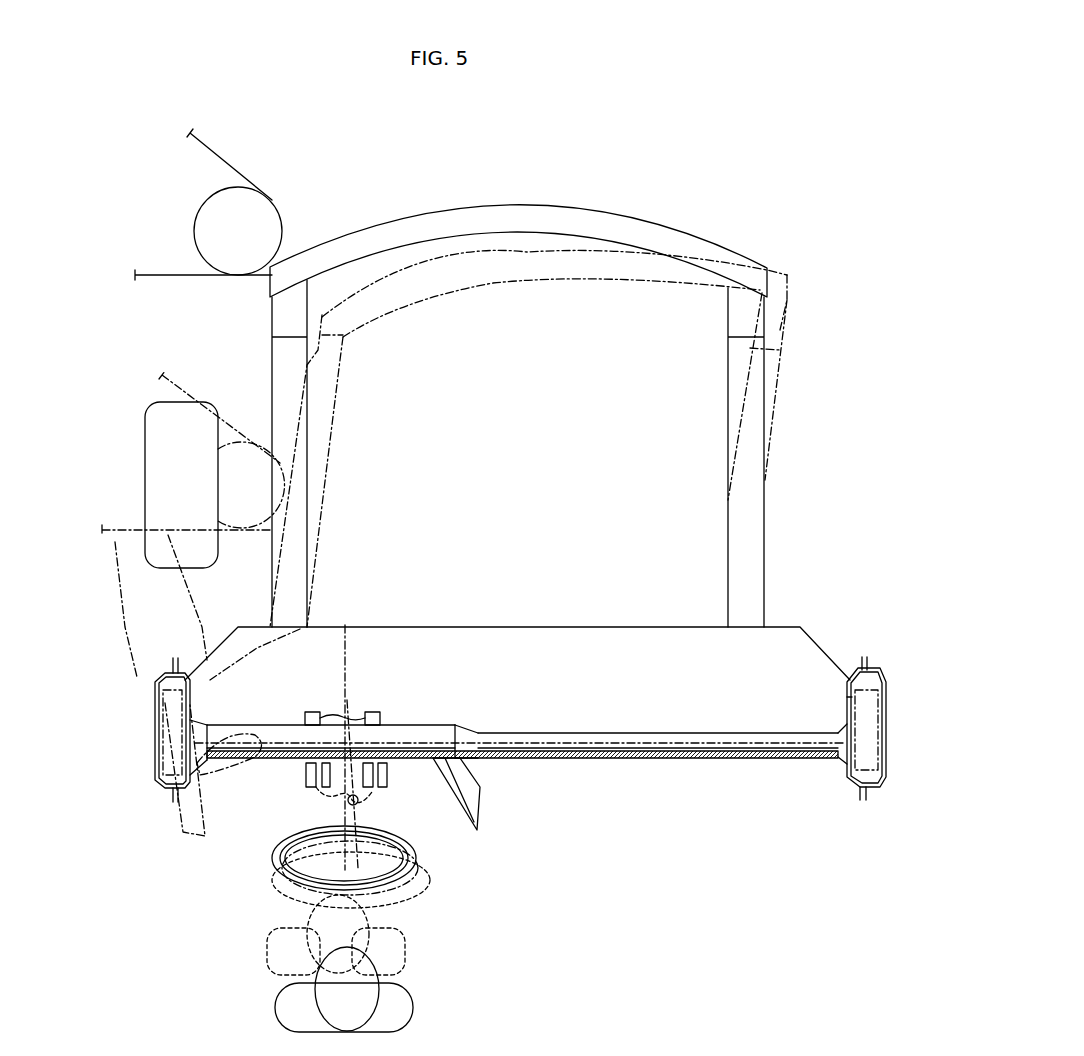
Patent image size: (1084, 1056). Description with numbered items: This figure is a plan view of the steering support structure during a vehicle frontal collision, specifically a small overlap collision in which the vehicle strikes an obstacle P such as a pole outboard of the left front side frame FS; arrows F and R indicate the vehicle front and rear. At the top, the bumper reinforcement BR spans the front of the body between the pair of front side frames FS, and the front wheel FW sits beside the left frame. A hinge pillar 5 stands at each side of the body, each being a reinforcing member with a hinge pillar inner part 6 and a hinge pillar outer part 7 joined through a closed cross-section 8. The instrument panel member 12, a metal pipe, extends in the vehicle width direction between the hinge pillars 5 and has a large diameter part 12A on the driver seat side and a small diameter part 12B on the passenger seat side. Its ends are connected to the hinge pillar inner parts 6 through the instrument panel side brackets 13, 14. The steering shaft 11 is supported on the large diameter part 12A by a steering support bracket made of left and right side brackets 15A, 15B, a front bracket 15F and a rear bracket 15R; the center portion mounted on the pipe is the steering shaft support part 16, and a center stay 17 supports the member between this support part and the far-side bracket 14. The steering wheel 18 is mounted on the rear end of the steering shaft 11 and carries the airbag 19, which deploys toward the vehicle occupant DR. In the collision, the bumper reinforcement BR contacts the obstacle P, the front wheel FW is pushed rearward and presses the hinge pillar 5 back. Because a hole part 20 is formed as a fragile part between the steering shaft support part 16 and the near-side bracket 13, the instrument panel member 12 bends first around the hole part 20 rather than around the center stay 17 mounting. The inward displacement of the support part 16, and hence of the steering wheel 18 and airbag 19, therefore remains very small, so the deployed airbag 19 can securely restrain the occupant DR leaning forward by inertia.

The hinge pillar 5 is at (190, 662).
The hinge pillar inner part 6 is at (192, 688).
The hinge pillar outer part 7 is at (168, 676).
The closed cross-section 8 is at (153, 700).
The steering shaft 11 is at (347, 660).
The instrument panel member 12 is at (520, 715).
The large diameter part 12A is at (422, 725).
The small diameter part 12B is at (627, 731).
The instrument panel side bracket 13 is at (198, 698).
The instrument panel side bracket 14 is at (847, 697).
The side bracket 15A is at (313, 712).
The side bracket 15B is at (380, 710).
The front bracket 15F is at (366, 712).
The rear bracket 15R is at (312, 782).
The steering shaft support part 16 is at (341, 701).
The center stay 17 is at (477, 772).
The steering wheel 18 is at (280, 846).
The airbag 19 is at (283, 898).
The hole part 20 is at (255, 733).
The obstacle P is at (268, 203).
The front wheel FW is at (157, 425).
The front side frame FS is at (283, 358).
The bumper reinforcement BR is at (527, 212).
The vehicle occupant DR is at (413, 1007).
The front direction F is at (567, 690).
The rear direction R is at (567, 990).